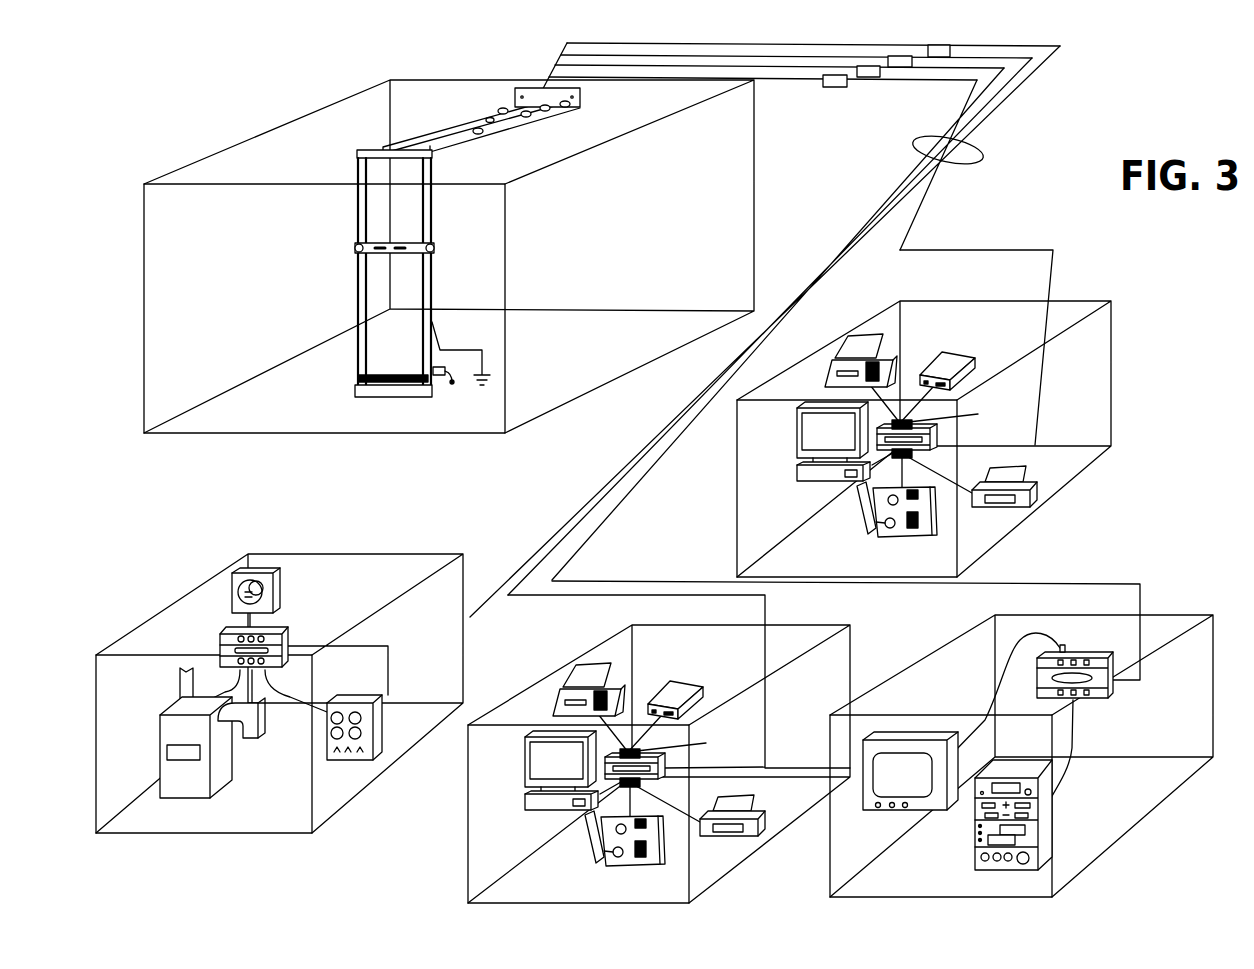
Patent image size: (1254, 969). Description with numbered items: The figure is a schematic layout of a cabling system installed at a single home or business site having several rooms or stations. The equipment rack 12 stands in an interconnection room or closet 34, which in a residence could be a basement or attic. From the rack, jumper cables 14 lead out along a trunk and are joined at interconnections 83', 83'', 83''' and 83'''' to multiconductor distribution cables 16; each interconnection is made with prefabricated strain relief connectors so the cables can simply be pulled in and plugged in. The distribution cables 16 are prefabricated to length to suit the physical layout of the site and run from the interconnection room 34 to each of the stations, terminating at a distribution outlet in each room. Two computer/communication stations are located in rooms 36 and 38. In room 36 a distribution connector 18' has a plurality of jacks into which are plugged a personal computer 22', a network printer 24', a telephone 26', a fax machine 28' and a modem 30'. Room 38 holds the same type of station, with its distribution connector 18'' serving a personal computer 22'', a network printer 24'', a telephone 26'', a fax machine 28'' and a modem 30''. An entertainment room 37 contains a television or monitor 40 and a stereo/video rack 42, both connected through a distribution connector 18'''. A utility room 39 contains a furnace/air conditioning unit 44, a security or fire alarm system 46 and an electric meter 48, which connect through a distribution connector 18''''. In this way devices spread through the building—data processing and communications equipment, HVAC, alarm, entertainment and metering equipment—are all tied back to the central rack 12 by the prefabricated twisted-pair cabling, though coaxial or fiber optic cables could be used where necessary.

The equipment rack 12 is at (472, 156).
The jumper cable 14 is at (647, 80).
The distribution cable 16 is at (977, 163).
The distribution outlet or connector 18' is at (935, 444).
The distribution outlet or connector 18'' is at (670, 775).
The distribution outlet or connector 18''' is at (1101, 682).
The distribution outlet or connector 18'''' is at (286, 635).
The personal computer 22' is at (821, 454).
The personal computer 22'' is at (544, 770).
The network printer 24' is at (1033, 489).
The network printer 24'' is at (753, 833).
The telephone 26' is at (897, 526).
The telephone 26'' is at (633, 856).
The fax machine 28' is at (888, 354).
The fax machine 28'' is at (620, 680).
The modem 30' is at (967, 360).
The modem 30'' is at (695, 690).
The interconnection room or closet 34 is at (747, 178).
The room 36 is at (1100, 371).
The entertainment room 37 is at (1173, 618).
The room 38 is at (837, 652).
The utility room 39 is at (422, 558).
The television or monitor 40 is at (872, 808).
The stereo/video rack 42 is at (1043, 808).
The furnace/air conditioning unit 44 is at (220, 768).
The security or fire alarm system 46 is at (373, 730).
The electric meter 48 is at (275, 591).
The interconnection 83' is at (943, 79).
The interconnection 83'' is at (908, 85).
The interconnection 83''' is at (867, 93).
The interconnection 83'''' is at (814, 98).